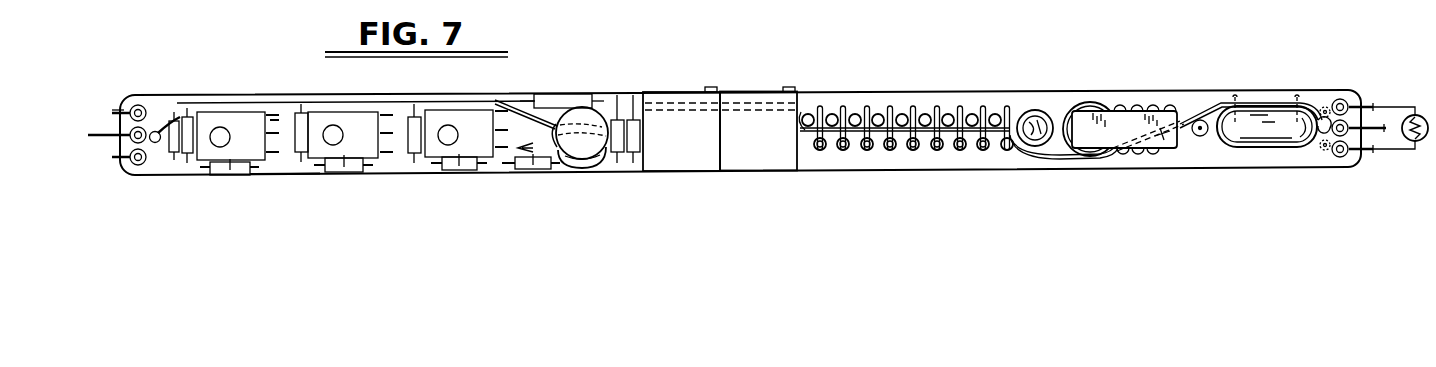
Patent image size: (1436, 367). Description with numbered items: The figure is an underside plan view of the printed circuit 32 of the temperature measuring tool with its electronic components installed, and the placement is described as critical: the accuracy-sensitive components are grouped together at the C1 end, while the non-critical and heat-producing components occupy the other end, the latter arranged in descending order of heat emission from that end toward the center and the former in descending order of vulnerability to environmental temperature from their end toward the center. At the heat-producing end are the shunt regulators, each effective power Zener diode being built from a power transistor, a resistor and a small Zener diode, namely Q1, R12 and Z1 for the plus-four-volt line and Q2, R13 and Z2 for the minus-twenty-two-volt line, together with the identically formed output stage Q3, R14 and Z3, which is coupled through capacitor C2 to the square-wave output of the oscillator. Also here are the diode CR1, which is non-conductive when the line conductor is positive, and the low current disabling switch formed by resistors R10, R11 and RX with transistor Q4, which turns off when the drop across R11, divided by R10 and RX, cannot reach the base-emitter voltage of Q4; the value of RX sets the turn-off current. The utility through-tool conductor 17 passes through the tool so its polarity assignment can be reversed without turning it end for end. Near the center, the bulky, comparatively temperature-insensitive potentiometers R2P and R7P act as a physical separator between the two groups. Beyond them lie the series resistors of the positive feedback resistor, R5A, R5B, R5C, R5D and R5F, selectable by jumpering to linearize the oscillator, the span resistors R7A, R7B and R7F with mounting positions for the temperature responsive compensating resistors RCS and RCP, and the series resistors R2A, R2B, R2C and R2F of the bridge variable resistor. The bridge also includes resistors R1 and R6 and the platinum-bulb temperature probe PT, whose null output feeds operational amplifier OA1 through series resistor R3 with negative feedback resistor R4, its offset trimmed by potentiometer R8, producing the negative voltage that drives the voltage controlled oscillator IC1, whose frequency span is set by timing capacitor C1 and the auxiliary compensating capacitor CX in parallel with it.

The utility through-tool conductor 17 is at (1394, 90).
The printed circuit 32 is at (288, 176).
The diode CR1 is at (163, 126).
The resistor R13 is at (191, 130).
The power transistor Q2 is at (241, 123).
The small Zener diode Z2 is at (233, 176).
The resistor R12 is at (300, 126).
The power transistor Q1 is at (375, 118).
The small Zener diode Z1 is at (348, 171).
The resistor R14 is at (415, 121).
The output transistor Q3 is at (469, 118).
The Zener diode Z3 is at (458, 171).
The resistor RX is at (526, 170).
The resistor R11 is at (549, 103).
The capacitor C2 is at (576, 118).
The resistor R10 is at (616, 120).
The transistor Q4 is at (588, 163).
The potentiometer R7P is at (674, 153).
The potentiometer R2P is at (749, 153).
The temperature responsive resistor RCS is at (804, 113).
The temperature responsive resistor RCP is at (819, 150).
The resistor R7F is at (828, 113).
The resistor R7A is at (843, 150).
The resistor R7B is at (851, 113).
The resistor R5A is at (867, 150).
The resistor R5B is at (877, 113).
The resistor R5C is at (890, 150).
The resistor R5D is at (902, 113).
The resistor R5F is at (926, 113).
The resistor R6 is at (913, 150).
The resistor R2A is at (937, 150).
The resistor R2B is at (949, 113).
The resistor R2C is at (960, 150).
The resistor R2F is at (984, 150).
The resistor R1 is at (974, 113).
The series resistor R3 is at (995, 113).
The negative feedback resistor R4 is at (1008, 151).
The potentiometer R8 is at (1036, 110).
The operational amplifier OA1 is at (1089, 104).
The voltage controlled oscillator IC1 is at (1113, 122).
The timing capacitor C1 is at (1263, 121).
The auxiliary capacitor CX is at (1329, 158).
The temperature probe PT is at (1421, 118).